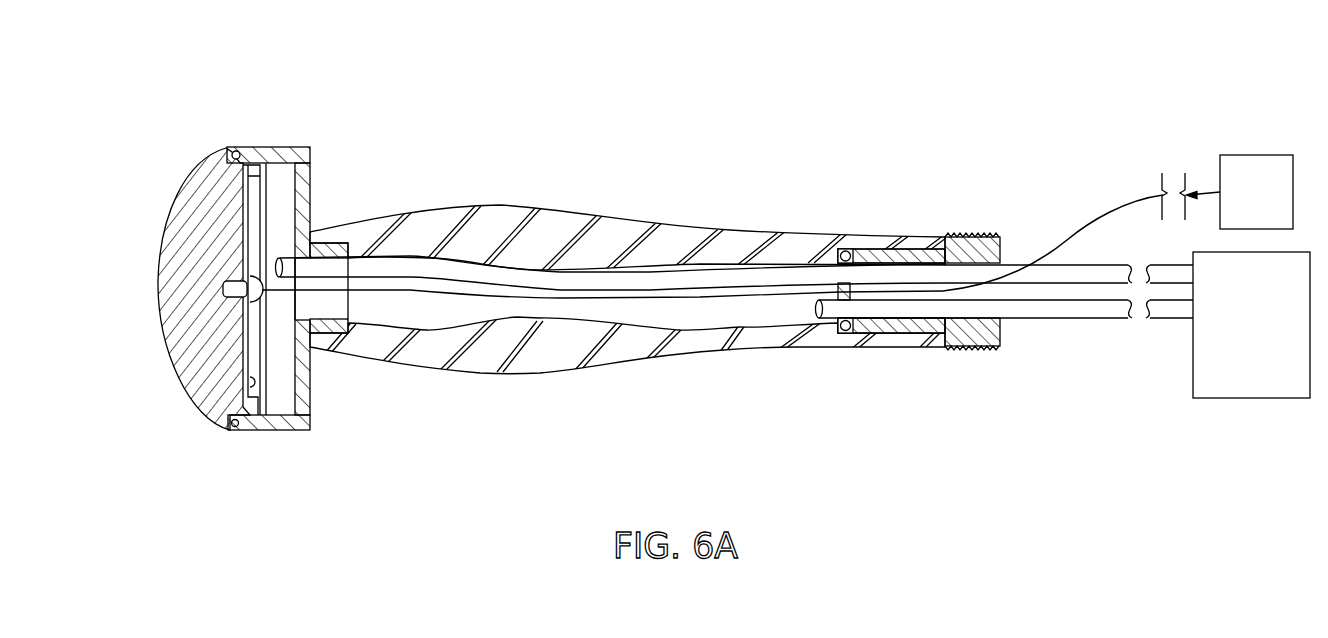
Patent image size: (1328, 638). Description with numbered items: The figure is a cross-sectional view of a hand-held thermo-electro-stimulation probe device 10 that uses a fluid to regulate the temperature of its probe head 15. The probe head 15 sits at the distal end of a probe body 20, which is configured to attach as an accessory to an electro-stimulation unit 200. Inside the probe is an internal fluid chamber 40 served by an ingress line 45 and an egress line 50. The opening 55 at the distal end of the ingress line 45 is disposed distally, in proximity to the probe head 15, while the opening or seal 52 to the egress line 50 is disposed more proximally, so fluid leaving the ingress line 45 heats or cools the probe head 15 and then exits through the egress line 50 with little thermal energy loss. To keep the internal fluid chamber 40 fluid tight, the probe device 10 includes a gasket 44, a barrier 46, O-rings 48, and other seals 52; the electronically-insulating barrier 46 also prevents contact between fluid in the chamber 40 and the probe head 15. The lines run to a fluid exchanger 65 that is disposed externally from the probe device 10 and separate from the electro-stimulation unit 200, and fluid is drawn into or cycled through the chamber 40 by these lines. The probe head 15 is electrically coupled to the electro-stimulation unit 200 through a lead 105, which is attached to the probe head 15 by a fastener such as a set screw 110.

The probe device 10 is at (742, 49).
The probe head 15 is at (179, 190).
The probe body 20 is at (633, 218).
The internal fluid chamber 40 is at (284, 187).
The gasket 44 is at (234, 150).
The ingress line 45 is at (1110, 265).
The barrier 46 is at (255, 383).
The O-ring 48 is at (846, 333).
The egress line 50 is at (1060, 318).
The seal 52 is at (974, 350).
The opening 55 is at (272, 267).
The fluid exchanger 65 is at (1268, 331).
The lead 105 is at (1110, 218).
The set screw 110 is at (223, 291).
The electro-stimulation unit 200 is at (1278, 204).